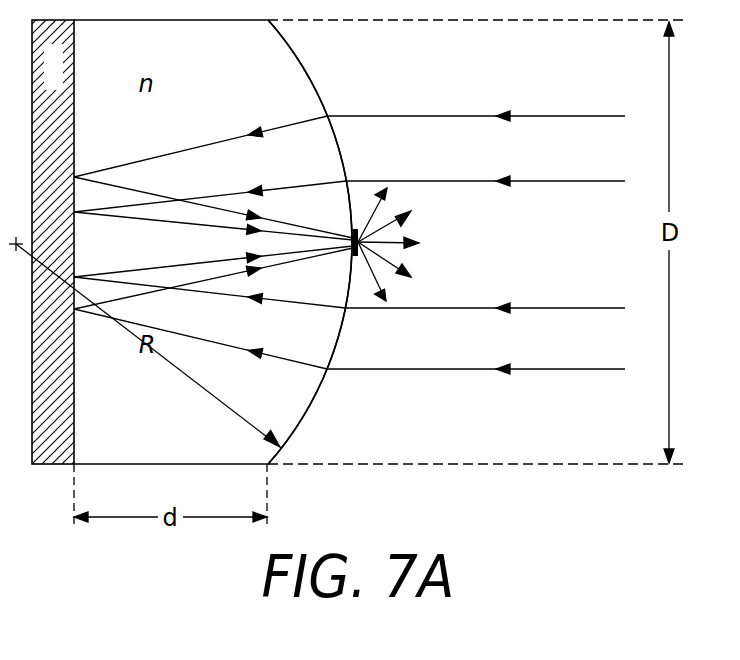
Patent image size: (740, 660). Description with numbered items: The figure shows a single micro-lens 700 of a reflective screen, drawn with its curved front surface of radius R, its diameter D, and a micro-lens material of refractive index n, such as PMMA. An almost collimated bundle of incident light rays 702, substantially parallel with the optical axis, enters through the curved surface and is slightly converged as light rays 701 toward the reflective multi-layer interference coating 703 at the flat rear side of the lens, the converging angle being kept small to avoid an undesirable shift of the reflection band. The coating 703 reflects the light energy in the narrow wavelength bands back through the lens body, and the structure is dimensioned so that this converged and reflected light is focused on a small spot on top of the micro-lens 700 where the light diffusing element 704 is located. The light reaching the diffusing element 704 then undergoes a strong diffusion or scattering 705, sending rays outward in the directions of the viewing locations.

The micro-lens 700 is at (388, 98).
The light rays 701 is at (298, 242).
The incident light rays 702 is at (476, 229).
The multi-layer interference coating 703 is at (258, 242).
The light diffusing element 704 is at (358, 242).
The scattering 705 is at (396, 240).